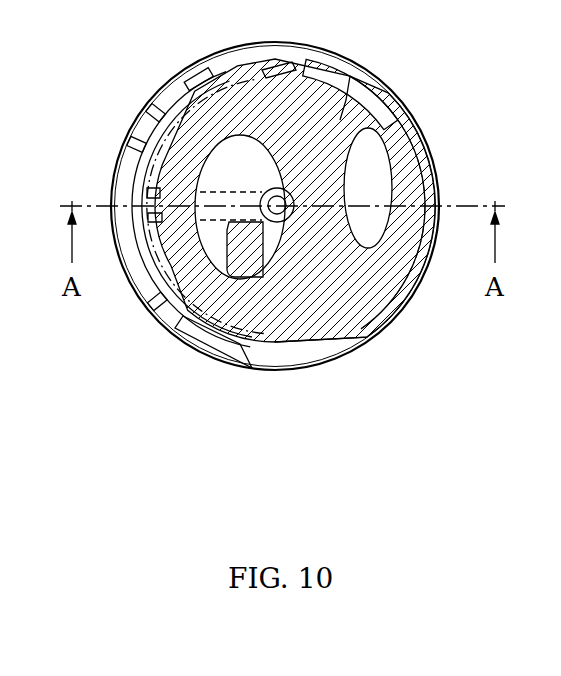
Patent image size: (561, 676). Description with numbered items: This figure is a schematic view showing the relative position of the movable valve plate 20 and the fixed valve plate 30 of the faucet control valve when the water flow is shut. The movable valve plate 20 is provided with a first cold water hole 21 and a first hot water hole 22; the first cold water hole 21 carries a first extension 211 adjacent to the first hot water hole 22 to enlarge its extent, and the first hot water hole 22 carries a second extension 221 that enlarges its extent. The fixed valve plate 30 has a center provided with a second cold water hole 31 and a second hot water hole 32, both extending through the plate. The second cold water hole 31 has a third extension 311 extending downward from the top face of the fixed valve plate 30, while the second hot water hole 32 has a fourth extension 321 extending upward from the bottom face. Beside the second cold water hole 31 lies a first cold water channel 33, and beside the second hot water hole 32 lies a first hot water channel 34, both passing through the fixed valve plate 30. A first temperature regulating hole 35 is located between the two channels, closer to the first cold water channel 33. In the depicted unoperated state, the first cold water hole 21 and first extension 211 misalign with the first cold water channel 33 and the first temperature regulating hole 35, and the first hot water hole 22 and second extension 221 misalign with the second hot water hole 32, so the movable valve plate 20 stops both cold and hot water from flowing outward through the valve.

The movable valve plate 20 is at (326, 352).
The first cold water hole 21 is at (152, 305).
The first hot water hole 22 is at (420, 278).
The first extension 211 is at (350, 76).
The second extension 221 is at (408, 110).
The fixed valve plate 30 is at (168, 333).
The second cold water hole 31 is at (233, 356).
The second hot water hole 32 is at (377, 313).
The first cold water channel 33 is at (160, 232).
The first hot water channel 34 is at (430, 196).
The first temperature regulating hole 35 is at (200, 97).
The third extension 311 is at (147, 190).
The fourth extension 321 is at (291, 61).